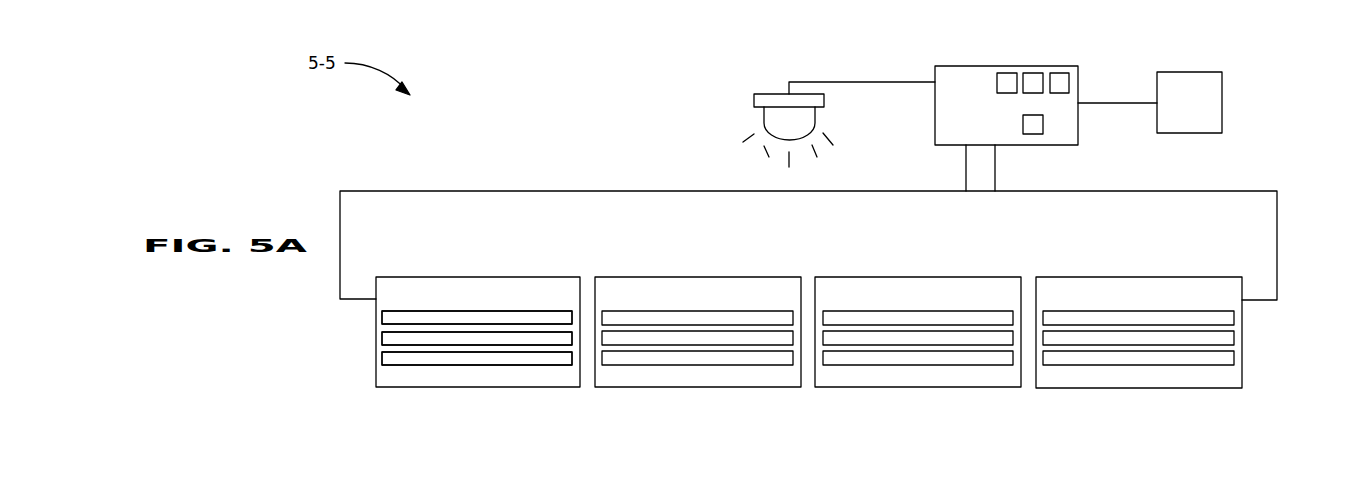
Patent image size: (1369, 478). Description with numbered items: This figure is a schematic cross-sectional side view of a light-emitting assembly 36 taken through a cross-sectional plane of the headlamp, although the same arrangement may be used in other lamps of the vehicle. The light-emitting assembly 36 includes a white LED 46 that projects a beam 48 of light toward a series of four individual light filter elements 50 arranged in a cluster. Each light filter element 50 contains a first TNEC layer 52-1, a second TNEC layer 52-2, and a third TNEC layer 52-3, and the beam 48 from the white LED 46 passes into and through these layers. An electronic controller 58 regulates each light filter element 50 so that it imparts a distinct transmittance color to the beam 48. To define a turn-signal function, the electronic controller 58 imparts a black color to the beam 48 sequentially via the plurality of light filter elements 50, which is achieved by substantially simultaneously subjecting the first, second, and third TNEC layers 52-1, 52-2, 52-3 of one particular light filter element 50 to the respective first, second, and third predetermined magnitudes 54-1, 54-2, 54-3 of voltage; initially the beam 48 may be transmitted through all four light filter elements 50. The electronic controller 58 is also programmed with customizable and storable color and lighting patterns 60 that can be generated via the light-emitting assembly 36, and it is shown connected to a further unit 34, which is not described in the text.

The controller 34 is at (1189, 102).
The light-emitting assembly 36 is at (1236, 244).
The white LED 46 is at (815, 120).
The beam of light 48 is at (764, 151).
The light filter element 50 is at (448, 394).
The first TNEC layer 52-1 is at (386, 317).
The second TNEC layer 52-2 is at (386, 338).
The third TNEC layer 52-3 is at (386, 358).
The first predetermined magnitude of voltage 54-1 is at (1060, 80).
The second predetermined magnitude of voltage 54-2 is at (1030, 80).
The third predetermined magnitude of voltage 54-3 is at (1006, 80).
The electronic controller 58 is at (1006, 105).
The customizable and storable color and lighting patterns 60 is at (1043, 125).